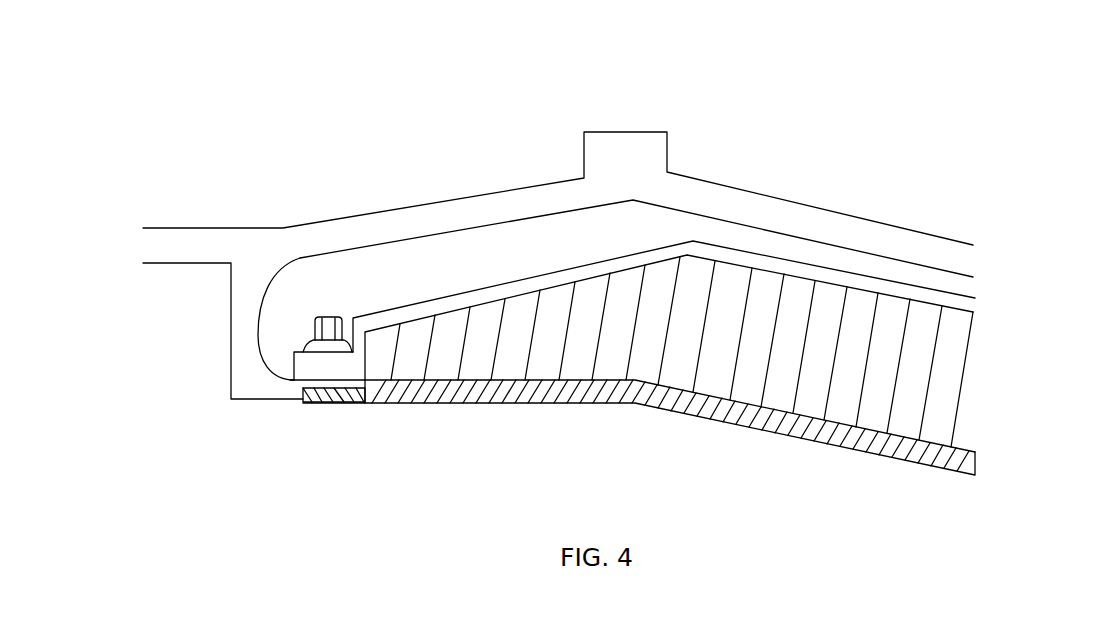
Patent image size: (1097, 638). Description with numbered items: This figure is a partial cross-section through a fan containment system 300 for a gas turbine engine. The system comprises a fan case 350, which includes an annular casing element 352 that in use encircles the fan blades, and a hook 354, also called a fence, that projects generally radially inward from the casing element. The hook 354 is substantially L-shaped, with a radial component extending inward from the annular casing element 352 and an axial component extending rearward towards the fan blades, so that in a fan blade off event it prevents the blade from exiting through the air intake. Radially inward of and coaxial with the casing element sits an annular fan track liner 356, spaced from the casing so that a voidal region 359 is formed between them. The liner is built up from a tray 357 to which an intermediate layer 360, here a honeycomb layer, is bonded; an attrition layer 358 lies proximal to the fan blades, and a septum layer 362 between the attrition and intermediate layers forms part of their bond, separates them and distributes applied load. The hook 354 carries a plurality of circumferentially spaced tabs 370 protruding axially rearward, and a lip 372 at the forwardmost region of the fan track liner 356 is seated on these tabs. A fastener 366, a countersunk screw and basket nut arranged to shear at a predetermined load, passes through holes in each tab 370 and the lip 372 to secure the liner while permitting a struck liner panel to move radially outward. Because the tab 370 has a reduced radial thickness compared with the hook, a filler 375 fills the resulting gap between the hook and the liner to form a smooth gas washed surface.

The fan containment system 300 is at (902, 61).
The fan case 350 is at (381, 203).
The annular casing element 352 is at (498, 207).
The hook 354 is at (265, 390).
The fan track liner 356 is at (806, 463).
The tray 357 is at (958, 300).
The attrition layer 358 is at (943, 462).
The voidal region 359 is at (440, 284).
The intermediate layer 360 is at (943, 377).
The septum layer 362 is at (927, 438).
The fastener 366 is at (328, 318).
The tab 370 is at (365, 403).
The lip 372 is at (318, 363).
The filler 375 is at (323, 401).